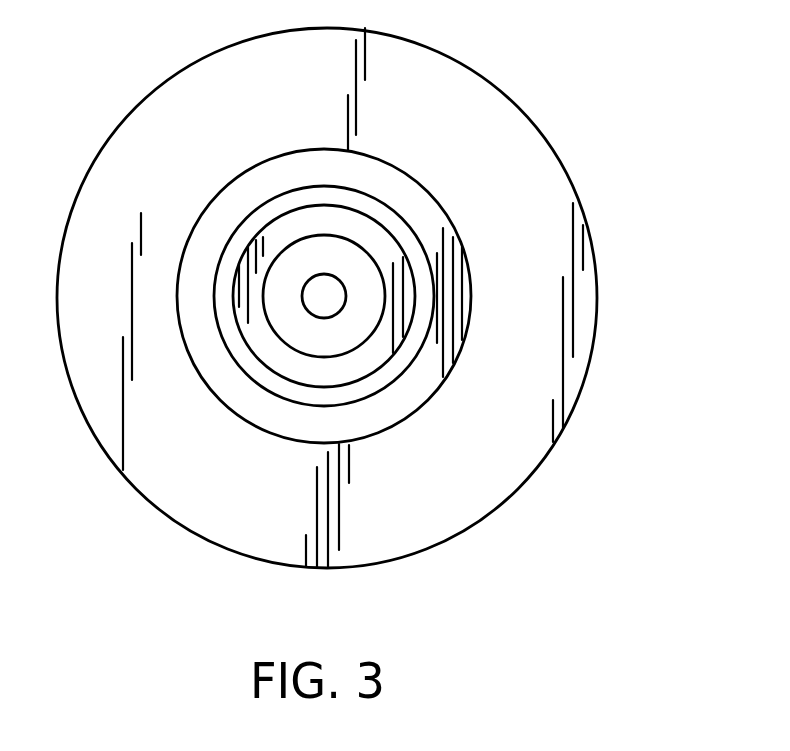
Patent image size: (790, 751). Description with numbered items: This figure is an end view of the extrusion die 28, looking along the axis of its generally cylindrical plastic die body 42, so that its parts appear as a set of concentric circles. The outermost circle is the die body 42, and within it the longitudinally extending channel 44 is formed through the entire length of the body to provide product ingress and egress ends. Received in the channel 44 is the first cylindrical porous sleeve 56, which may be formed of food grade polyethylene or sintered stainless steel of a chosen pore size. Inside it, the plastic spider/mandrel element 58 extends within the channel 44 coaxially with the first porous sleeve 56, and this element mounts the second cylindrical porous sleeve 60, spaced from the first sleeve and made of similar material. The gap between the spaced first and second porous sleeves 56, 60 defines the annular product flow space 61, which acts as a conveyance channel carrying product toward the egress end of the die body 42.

The extrusion die 28 is at (596, 149).
The die body 42 is at (506, 500).
The channel 44 is at (412, 190).
The first cylindrical porous sleeve 56 is at (218, 228).
The spider/mandrel element 58 is at (293, 332).
The second cylindrical porous sleeve 60 is at (316, 218).
The annular product flow space 61 is at (404, 372).